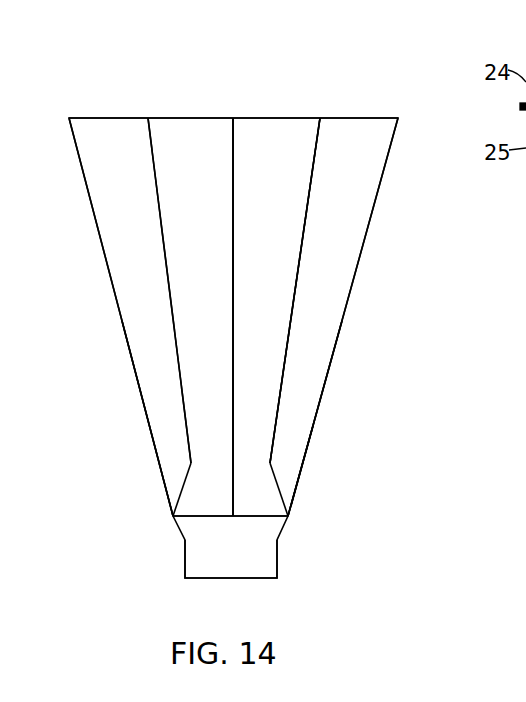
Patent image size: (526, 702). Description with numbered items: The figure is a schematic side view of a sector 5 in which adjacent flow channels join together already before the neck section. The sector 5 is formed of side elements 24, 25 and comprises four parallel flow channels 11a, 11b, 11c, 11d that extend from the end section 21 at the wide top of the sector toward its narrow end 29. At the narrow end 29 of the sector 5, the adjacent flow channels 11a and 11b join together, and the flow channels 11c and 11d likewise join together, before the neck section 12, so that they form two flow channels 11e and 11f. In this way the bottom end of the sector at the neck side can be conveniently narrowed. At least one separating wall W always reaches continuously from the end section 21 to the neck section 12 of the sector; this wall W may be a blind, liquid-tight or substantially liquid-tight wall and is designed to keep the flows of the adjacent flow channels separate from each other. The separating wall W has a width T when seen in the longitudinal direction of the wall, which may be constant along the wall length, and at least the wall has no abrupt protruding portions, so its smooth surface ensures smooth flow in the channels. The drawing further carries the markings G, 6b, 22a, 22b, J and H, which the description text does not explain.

The sector 5 is at (402, 315).
The end section 21 is at (327, 85).
The side element 24 is at (382, 197).
The side element 25 is at (345, 235).
The outer wall 6b is at (147, 322).
The first side wall 22a is at (122, 397).
The second side wall 22b is at (430, 398).
The narrow end 29 is at (372, 528).
The neck section 12 is at (246, 568).
The flow channel 11a is at (138, 174).
The flow channel 11b is at (218, 174).
The flow channel 11c is at (295, 174).
The flow channel 11d is at (373, 174).
The flow channel 11e is at (225, 503).
The flow channel 11f is at (280, 503).
The direction of gravity G is at (230, 5).
The width of the separating wall T is at (277, 269).
The separating wall W is at (227, 407).
The reference level J is at (307, 448).
The reference level H is at (296, 488).